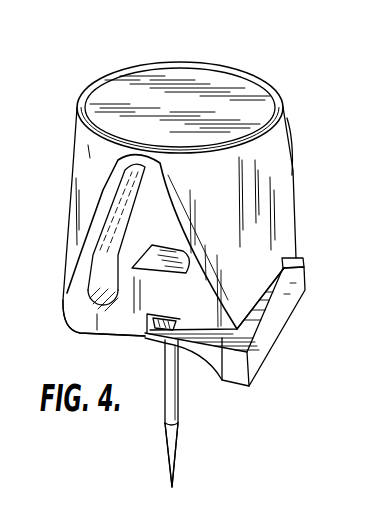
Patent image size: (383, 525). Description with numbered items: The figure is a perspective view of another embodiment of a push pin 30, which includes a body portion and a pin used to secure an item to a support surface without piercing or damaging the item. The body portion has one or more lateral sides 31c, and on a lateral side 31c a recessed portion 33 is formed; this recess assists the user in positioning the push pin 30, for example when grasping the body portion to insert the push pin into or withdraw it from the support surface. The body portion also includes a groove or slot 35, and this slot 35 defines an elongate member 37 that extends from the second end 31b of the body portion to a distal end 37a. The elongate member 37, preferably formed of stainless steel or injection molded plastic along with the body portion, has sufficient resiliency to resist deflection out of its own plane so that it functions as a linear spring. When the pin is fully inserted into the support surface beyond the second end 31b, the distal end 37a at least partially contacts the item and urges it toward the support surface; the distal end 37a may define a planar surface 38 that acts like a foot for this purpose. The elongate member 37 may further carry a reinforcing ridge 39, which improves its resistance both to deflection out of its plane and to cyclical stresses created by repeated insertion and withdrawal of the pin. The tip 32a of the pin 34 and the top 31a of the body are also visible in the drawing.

The push pin 30 is at (287, 68).
The top surface of head 31a is at (172, 62).
The second end of the body portion 31b is at (100, 333).
The lateral side of the body portion 31c is at (92, 157).
The recessed portion 33 is at (153, 200).
The groove or slot 35 is at (218, 338).
The elongate member 37 is at (282, 260).
The distal end of the elongate member 37a is at (278, 320).
The planar surface 38 is at (237, 386).
The reinforcing ridge 39 is at (148, 333).
The pin shaft 34 is at (175, 487).
The pin tip 32a is at (172, 487).